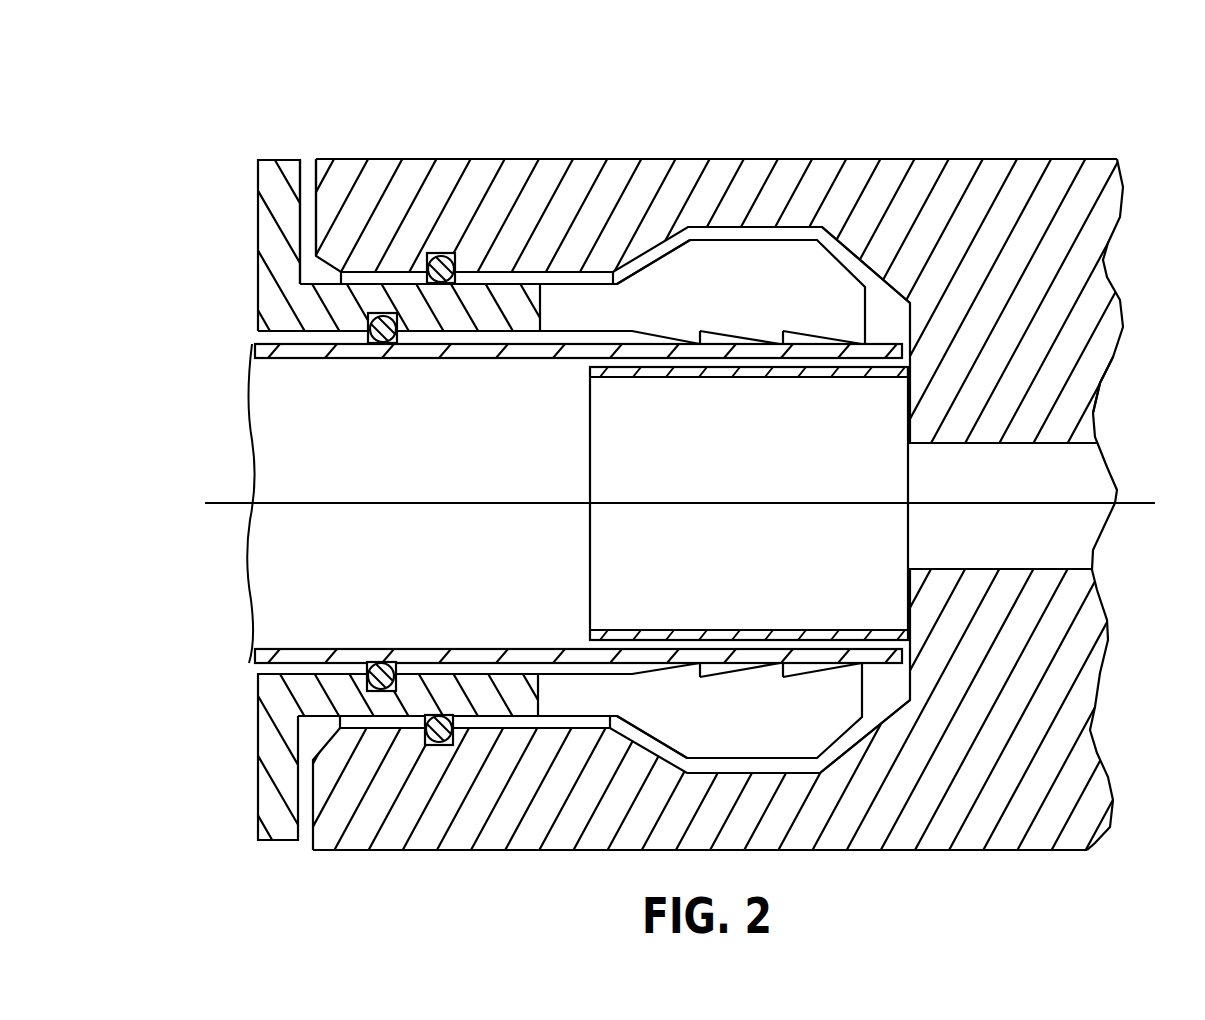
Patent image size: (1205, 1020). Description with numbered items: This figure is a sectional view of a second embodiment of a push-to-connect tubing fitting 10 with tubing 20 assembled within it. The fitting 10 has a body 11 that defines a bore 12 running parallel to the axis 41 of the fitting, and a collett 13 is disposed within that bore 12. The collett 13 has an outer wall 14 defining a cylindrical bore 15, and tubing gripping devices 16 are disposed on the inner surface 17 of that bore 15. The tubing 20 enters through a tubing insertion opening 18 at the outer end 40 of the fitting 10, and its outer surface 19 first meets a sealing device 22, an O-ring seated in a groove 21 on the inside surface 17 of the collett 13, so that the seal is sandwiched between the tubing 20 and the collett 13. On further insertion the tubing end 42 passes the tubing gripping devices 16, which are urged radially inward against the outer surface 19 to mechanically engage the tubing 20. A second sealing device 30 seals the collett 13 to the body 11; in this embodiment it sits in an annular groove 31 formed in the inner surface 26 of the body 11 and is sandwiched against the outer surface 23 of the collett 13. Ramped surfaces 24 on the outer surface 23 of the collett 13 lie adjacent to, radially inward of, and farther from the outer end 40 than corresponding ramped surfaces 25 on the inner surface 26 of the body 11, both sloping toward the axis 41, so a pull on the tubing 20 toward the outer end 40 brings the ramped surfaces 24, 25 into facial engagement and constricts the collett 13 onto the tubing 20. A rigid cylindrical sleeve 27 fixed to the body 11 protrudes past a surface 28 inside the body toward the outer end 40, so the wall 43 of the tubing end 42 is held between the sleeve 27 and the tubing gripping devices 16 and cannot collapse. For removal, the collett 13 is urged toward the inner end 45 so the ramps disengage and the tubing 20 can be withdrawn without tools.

The fitting 10 is at (1015, 118).
The body 11 is at (1112, 158).
The bore 12 is at (310, 160).
The collett 13 is at (258, 236).
The outer wall 14 is at (303, 310).
The cylindrical bore 15 is at (258, 340).
The tubing gripping devices 16 is at (865, 342).
The inner surface 17 is at (512, 272).
The tubing insertion opening 18 is at (242, 472).
The outer surface 19 is at (322, 348).
The tubing 20 is at (310, 587).
The groove 21 is at (382, 314).
The sealing device 22 is at (383, 313).
The outer surface 23 is at (570, 283).
The ramped surfaces 24 is at (686, 227).
The ramped surfaces 25 is at (670, 237).
The inner surface 26 is at (520, 333).
The sleeve 27 is at (695, 377).
The surface 28 is at (910, 323).
The sealing device 30 is at (453, 253).
The annular groove 31 is at (437, 253).
The outer end 40 is at (212, 268).
The axis 41 is at (1138, 503).
The tubing end 42 is at (882, 363).
The wall 43 is at (503, 347).
The inner end 45 is at (1155, 390).